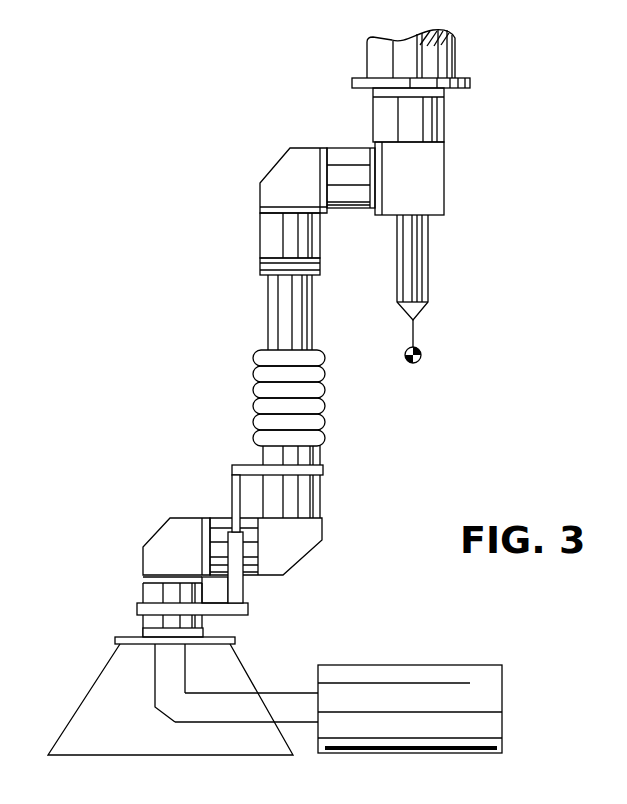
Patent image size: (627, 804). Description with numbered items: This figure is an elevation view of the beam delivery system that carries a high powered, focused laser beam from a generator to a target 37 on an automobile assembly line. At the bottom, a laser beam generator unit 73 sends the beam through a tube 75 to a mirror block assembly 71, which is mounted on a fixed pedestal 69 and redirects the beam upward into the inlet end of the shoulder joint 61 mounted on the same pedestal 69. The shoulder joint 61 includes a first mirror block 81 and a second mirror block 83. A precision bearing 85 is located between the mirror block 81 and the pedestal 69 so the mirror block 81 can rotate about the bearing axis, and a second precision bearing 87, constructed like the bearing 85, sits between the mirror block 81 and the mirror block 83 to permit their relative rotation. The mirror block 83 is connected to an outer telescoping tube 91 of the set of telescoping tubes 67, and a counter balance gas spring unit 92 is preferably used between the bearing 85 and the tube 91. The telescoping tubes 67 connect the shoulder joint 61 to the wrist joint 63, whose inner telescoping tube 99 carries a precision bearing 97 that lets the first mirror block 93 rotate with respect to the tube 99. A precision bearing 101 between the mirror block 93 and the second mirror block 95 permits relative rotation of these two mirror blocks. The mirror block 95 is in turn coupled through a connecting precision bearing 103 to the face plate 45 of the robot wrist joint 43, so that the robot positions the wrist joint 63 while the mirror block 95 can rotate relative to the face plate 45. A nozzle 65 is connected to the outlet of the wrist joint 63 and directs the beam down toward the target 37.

The target 37 is at (421, 357).
The wrist joint 43 is at (367, 57).
The face plate 45 is at (470, 82).
The shoulder joint 61 is at (120, 513).
The wrist joint 63 is at (238, 137).
The nozzle 65 is at (428, 278).
The set of telescoping tubes 67 is at (224, 352).
The fixed pedestal 69 is at (82, 702).
The mirror block assembly 71 is at (162, 718).
The laser beam generator unit 73 is at (400, 665).
The tube 75 is at (280, 693).
The first mirror block 81 is at (140, 552).
The second mirror block 83 is at (320, 527).
The precision bearing 85 is at (140, 597).
The precision bearing 87 is at (214, 518).
The outer telescoping tube 91 is at (322, 453).
The counter balance gas spring unit 92 is at (247, 588).
The first mirror block 93 is at (258, 168).
The second mirror block 95 is at (445, 170).
The precision bearing 97 is at (257, 247).
The inner telescoping tube 99 is at (265, 307).
The precision bearing 101 is at (342, 148).
The connecting precision bearing 103 is at (445, 115).